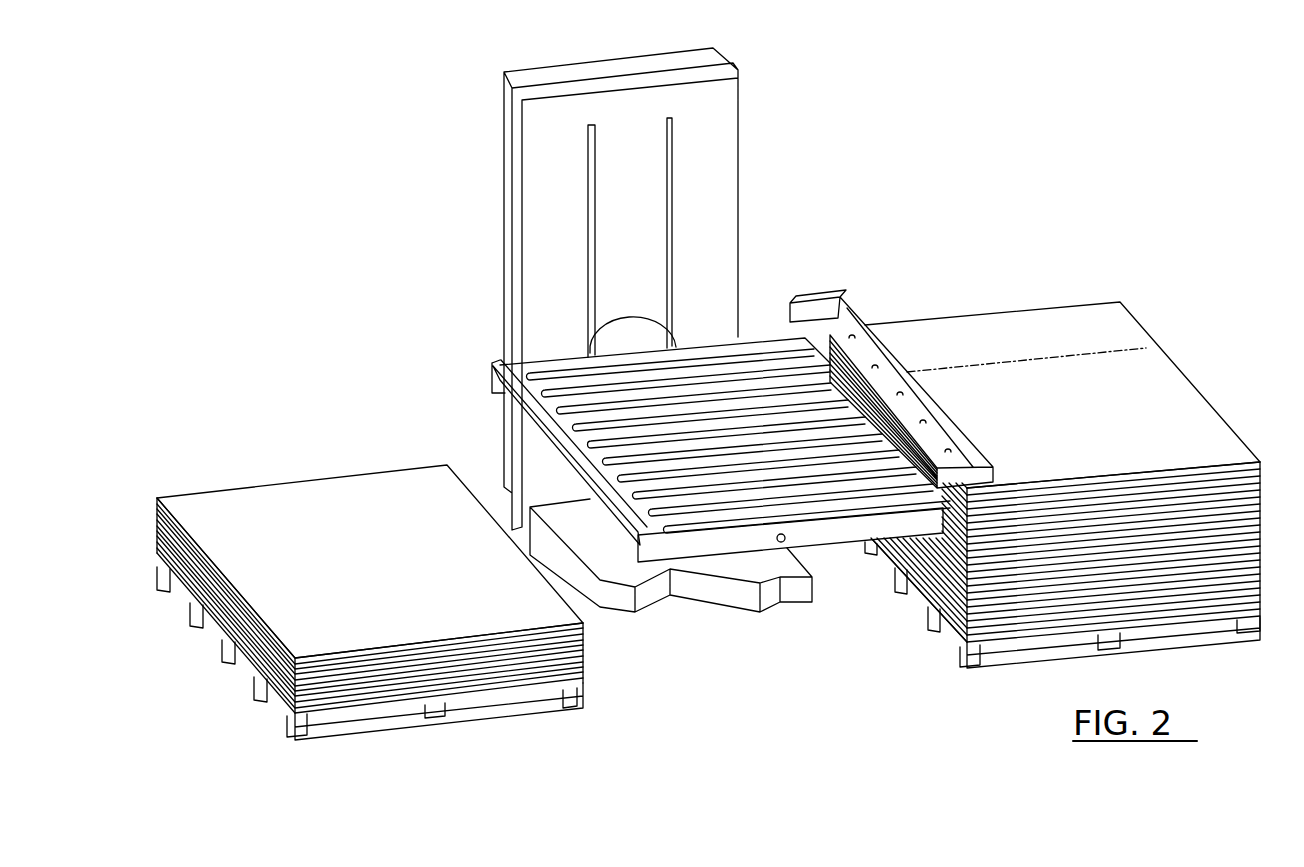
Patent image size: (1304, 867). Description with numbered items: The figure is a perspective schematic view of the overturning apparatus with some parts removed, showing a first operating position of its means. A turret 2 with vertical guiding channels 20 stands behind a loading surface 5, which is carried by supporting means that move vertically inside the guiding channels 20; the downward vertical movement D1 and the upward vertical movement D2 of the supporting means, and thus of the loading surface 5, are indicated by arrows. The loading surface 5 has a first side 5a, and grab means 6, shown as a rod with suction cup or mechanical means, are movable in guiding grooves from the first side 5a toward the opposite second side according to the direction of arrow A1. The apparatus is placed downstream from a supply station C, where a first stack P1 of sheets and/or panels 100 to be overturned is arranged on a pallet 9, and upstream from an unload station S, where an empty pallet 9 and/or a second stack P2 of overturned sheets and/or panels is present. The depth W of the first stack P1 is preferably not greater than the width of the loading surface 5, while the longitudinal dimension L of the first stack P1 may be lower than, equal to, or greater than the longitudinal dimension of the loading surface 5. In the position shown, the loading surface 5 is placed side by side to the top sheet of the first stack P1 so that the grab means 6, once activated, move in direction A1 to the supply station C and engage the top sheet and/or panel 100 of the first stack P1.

The turret 2 is at (698, 67).
The vertical guiding channel 20 is at (590, 197).
The loading surface 5 is at (665, 434).
The first side of the loading surface 5a is at (496, 413).
The grab means 6 is at (855, 312).
The sheet and/or panel 100 is at (933, 335).
The pallet 9 is at (338, 732).
The first stack P1 is at (1065, 440).
The second stack P2 is at (259, 502).
The supply station C is at (1112, 210).
The unload station S is at (316, 368).
The direction of movement of the grab means A1 is at (846, 270).
The downward vertical movement D1 is at (554, 298).
The upward vertical movement D2 is at (712, 222).
The longitudinal dimension of the first stack L is at (1070, 344).
The depth of the first stack W is at (1072, 320).